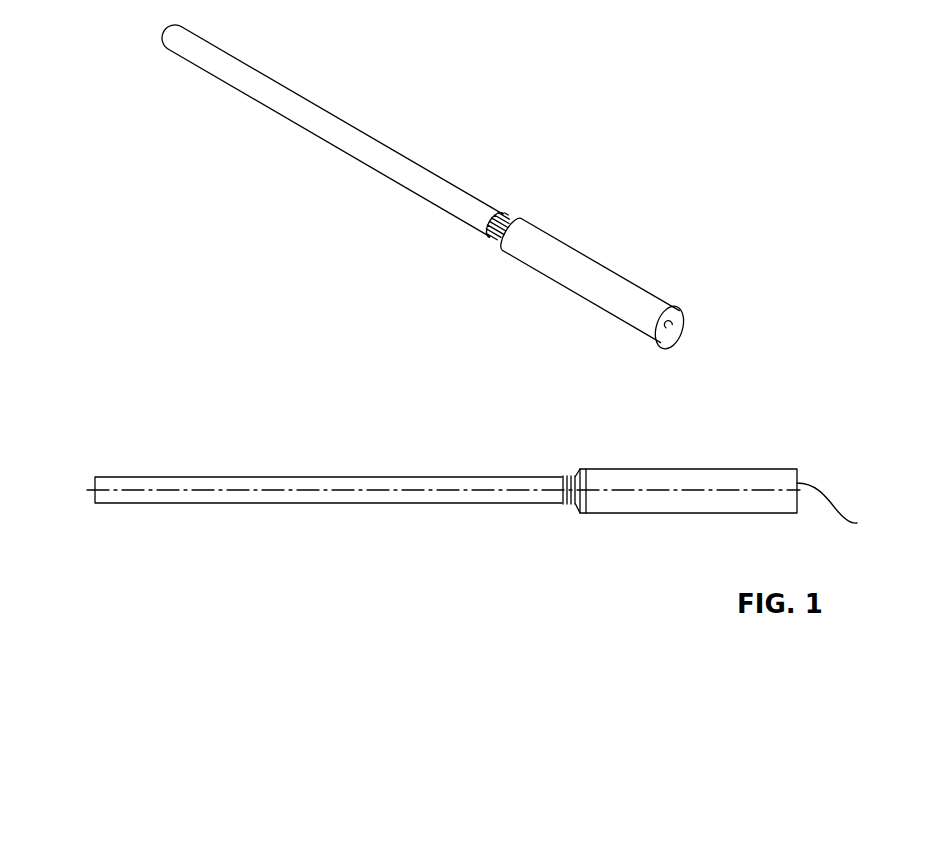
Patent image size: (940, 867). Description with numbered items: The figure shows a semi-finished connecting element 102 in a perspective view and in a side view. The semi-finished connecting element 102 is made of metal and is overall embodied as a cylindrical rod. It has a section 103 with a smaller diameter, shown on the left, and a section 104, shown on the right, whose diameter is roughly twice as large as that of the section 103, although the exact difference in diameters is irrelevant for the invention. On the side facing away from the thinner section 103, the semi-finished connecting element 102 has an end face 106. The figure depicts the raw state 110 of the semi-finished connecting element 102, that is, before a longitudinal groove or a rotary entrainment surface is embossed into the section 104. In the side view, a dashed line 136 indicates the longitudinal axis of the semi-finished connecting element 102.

The semi-finished connecting element 102 is at (622, 273).
The section having a smaller diameter 103 is at (390, 162).
The section 104 is at (550, 258).
The end face 106 is at (672, 323).
The raw state 110 is at (270, 255).
The dashed line 136 is at (197, 490).